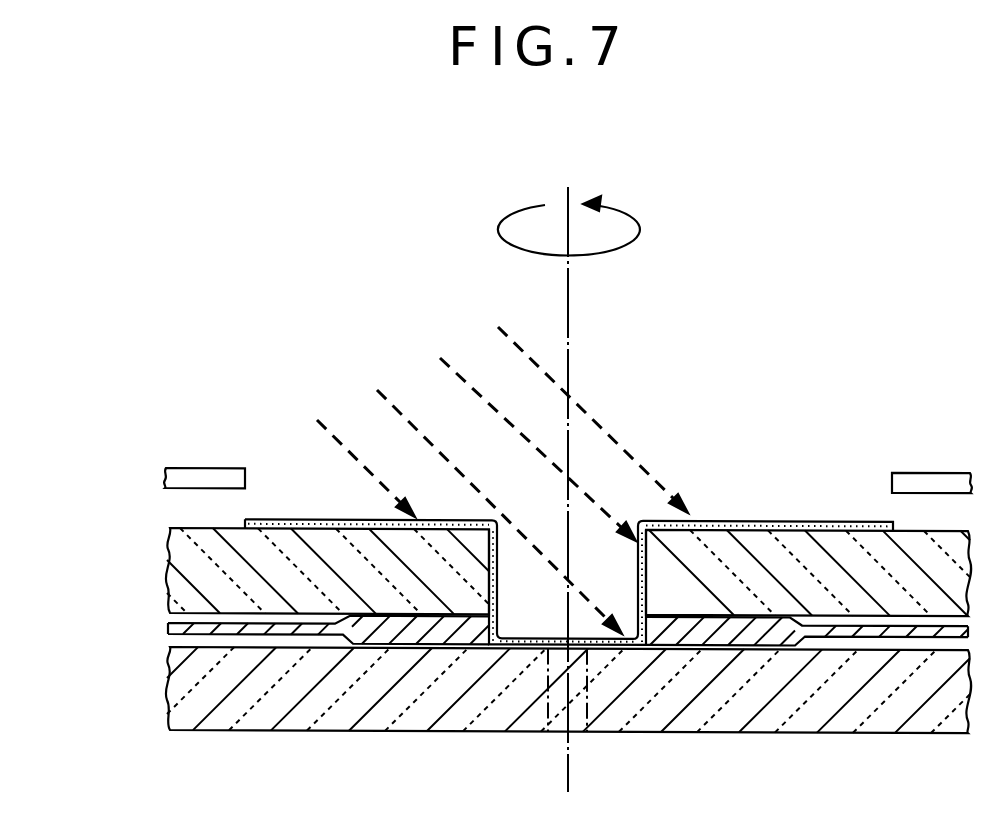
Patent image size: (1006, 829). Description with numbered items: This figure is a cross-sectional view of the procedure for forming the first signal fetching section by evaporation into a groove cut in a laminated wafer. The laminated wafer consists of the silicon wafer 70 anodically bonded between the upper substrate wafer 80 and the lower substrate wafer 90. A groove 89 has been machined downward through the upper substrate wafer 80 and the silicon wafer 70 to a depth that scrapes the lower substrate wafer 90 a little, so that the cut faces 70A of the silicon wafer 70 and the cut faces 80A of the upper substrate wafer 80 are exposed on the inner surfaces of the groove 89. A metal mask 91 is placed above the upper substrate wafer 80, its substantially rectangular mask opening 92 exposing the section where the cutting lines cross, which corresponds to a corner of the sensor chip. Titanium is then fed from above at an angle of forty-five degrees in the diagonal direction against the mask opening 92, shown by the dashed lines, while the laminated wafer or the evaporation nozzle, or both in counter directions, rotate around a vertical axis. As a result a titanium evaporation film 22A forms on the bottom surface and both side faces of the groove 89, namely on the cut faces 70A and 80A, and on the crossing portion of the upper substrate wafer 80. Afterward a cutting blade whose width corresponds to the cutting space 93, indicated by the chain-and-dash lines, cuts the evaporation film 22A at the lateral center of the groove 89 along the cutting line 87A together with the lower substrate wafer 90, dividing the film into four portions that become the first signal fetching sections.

The titanium evaporation film 22A is at (447, 518).
The silicon wafer 70 is at (183, 629).
The cut face of the silicon wafer 70A is at (499, 615).
The upper substrate wafer 80 is at (183, 571).
The cut face of the upper substrate wafer 80A is at (497, 550).
The cutting line 87A is at (568, 772).
The groove 89 is at (588, 561).
The lower substrate wafer 90 is at (183, 686).
The metal mask 91 is at (198, 477).
The mask opening 92 is at (822, 494).
The cutting space 93 is at (587, 720).